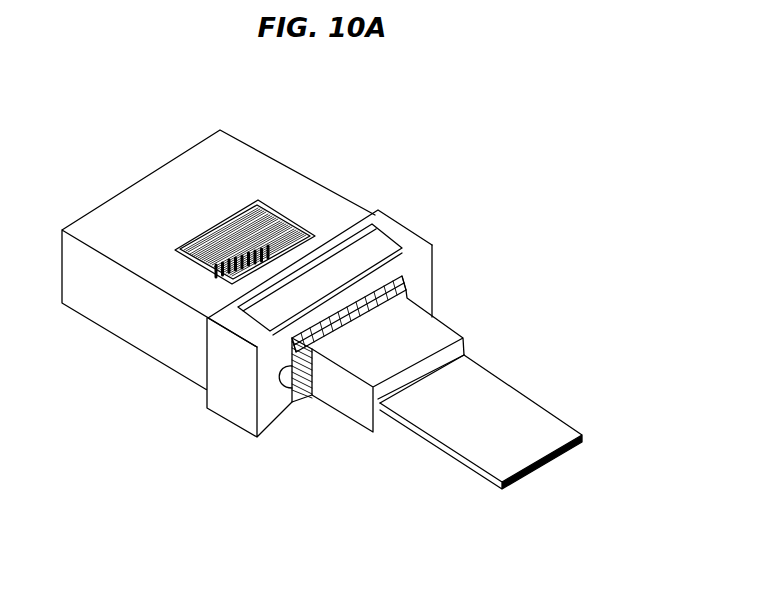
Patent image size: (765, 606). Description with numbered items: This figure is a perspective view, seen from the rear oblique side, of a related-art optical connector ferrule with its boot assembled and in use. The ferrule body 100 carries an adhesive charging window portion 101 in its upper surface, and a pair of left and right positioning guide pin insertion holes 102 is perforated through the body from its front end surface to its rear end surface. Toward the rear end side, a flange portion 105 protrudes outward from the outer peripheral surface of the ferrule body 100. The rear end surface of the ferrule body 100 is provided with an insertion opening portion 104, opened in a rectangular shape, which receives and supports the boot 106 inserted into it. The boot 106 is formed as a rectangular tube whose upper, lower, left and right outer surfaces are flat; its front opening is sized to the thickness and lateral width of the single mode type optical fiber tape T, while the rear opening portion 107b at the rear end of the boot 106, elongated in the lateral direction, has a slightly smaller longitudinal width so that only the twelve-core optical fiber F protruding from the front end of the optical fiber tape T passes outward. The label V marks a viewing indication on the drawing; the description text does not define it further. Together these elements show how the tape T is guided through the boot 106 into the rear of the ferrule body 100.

The ferrule body 100 is at (343, 179).
The adhesive charging window portion 101 is at (217, 233).
The positioning guide pin insertion holes 102 is at (408, 289).
The insertion opening portion 104 is at (340, 327).
The flange portion 105 is at (400, 224).
The boot 106 is at (356, 406).
The rear opening portion 107b is at (421, 380).
The view direction V is at (236, 233).
The single mode type optical fiber tape T is at (517, 412).
The twelve-core optical fiber F is at (524, 476).